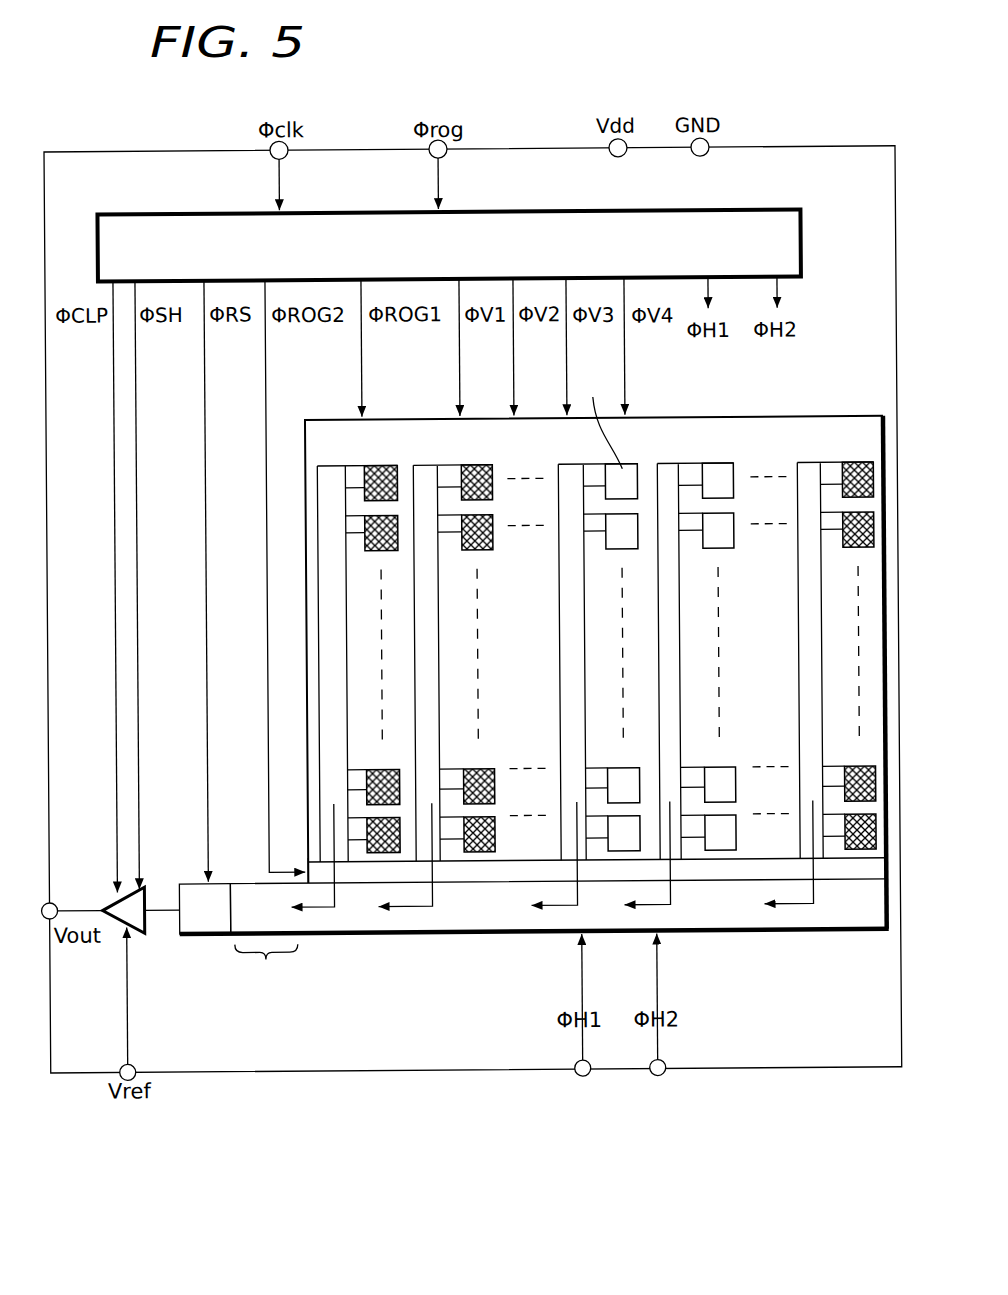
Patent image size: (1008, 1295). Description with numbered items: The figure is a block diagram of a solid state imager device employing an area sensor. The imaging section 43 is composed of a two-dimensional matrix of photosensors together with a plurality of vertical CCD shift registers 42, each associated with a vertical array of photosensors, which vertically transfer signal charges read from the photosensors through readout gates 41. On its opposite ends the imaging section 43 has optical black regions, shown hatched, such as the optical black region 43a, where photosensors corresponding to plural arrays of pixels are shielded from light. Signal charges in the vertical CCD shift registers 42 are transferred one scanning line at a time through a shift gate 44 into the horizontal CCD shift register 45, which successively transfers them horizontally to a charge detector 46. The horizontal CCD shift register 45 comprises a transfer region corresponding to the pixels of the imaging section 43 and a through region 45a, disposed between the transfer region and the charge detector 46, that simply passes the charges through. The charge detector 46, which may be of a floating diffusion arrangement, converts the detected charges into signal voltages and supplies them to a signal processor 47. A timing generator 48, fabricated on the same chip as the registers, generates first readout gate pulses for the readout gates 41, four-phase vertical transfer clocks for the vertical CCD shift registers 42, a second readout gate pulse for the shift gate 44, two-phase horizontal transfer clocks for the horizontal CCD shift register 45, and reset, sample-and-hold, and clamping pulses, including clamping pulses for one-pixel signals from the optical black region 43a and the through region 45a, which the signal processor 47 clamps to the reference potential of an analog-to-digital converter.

The readout gate 41 is at (590, 472).
The vertical CCD shift register 42 is at (810, 473).
The imaging section 43 is at (583, 646).
The optical black region 43a is at (480, 415).
The shift gate 44 is at (305, 862).
The horizontal CCD shift register 45 is at (534, 934).
The through region 45a is at (266, 966).
The charge detector 46 is at (197, 924).
The signal processor 47 is at (107, 902).
The timing generator 48 is at (700, 214).